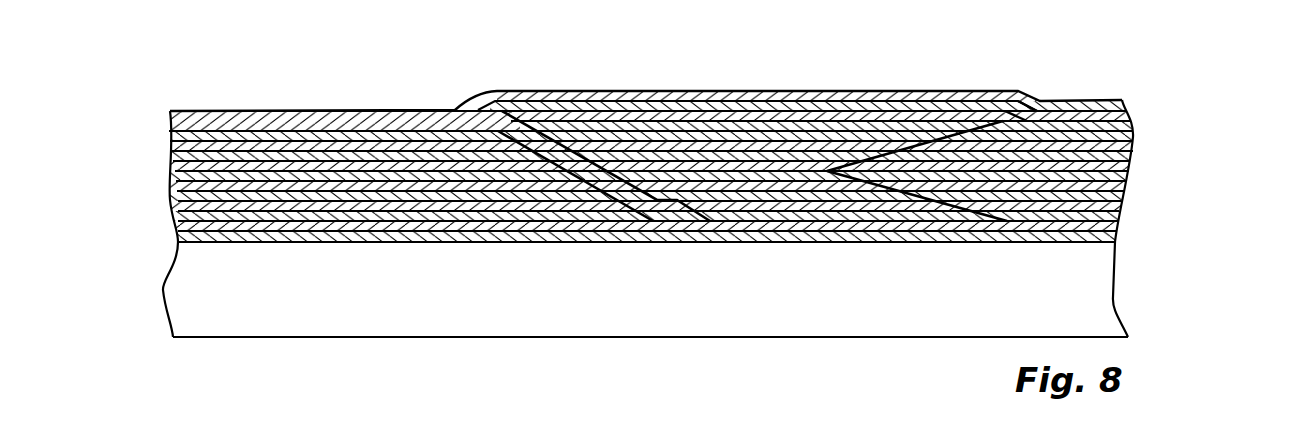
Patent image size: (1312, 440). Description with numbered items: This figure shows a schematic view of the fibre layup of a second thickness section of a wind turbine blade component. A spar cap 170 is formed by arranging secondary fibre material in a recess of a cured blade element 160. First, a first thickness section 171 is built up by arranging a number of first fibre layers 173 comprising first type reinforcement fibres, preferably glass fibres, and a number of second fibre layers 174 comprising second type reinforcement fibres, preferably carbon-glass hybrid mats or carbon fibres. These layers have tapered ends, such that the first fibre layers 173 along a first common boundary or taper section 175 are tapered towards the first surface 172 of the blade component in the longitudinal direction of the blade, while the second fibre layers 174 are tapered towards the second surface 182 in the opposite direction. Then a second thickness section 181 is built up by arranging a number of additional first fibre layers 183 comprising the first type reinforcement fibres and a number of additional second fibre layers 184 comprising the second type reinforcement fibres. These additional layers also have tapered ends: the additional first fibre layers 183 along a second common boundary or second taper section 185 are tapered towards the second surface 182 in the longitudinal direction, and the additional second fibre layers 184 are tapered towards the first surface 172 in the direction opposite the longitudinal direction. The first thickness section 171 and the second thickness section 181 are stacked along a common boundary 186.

The cured blade element 160 is at (325, 106).
The spar cap 170 is at (608, 87).
The first thickness section 171 is at (1126, 202).
The first surface 172 is at (1115, 243).
The first fibre layers 173 is at (776, 213).
The second fibre layers 174 is at (1018, 222).
The first common boundary or taper section 175 is at (872, 206).
The second thickness section 181 is at (1136, 137).
The second surface 182 is at (836, 118).
The additional first fibre layers 183 is at (718, 120).
The additional second fibre layers 184 is at (1067, 100).
The second common boundary or second taper section 185 is at (906, 130).
The common boundary 186 is at (775, 180).